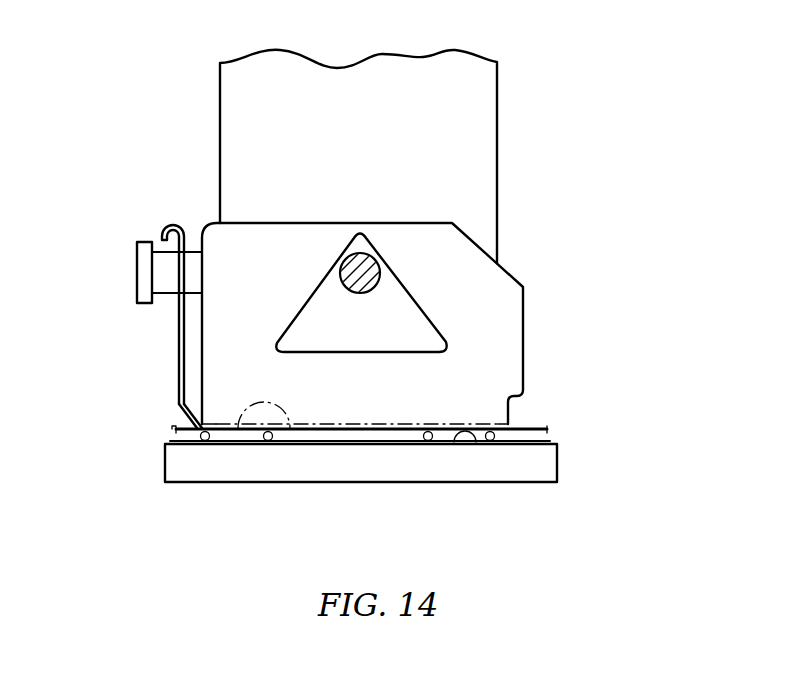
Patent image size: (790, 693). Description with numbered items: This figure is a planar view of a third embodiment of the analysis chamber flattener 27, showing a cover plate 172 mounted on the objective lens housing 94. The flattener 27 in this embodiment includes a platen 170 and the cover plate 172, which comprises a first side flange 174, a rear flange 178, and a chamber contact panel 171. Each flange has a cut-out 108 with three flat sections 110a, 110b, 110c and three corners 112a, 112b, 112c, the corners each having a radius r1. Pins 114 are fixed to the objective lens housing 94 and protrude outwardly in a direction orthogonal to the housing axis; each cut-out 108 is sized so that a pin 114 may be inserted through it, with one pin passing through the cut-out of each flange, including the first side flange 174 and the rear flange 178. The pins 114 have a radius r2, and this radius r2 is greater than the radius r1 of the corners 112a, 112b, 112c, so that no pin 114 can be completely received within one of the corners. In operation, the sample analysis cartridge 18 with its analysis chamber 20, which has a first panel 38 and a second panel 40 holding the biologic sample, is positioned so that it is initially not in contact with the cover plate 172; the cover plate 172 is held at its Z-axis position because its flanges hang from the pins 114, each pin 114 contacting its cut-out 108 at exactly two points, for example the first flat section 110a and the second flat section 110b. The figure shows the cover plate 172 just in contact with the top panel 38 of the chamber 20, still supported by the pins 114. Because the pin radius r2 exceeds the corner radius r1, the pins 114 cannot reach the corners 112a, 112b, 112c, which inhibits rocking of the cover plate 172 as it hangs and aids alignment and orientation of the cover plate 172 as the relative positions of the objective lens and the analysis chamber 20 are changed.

The objective lens housing 94 is at (466, 105).
The analysis chamber flattener 27 is at (565, 128).
The cover plate 172 is at (618, 283).
The pin 114 is at (153, 246).
The rear flange 178 is at (181, 343).
The first flat section 110a is at (300, 307).
The second flat section 110b is at (408, 293).
The third flat section 110c is at (317, 352).
The first corner 112a is at (278, 350).
The second corner 112b is at (357, 232).
The third corner 112c is at (444, 348).
The cut-out 108 is at (312, 258).
The pin radius r2 is at (359, 262).
The corner radius r1 is at (408, 324).
The first side flange 174 is at (497, 412).
The sample analysis cartridge 18 is at (155, 437).
The analysis chamber 20 is at (364, 450).
The second panel 40 is at (452, 443).
The first panel 38 is at (518, 432).
The platen 170 is at (545, 458).
The chamber contact panel 171 is at (246, 437).